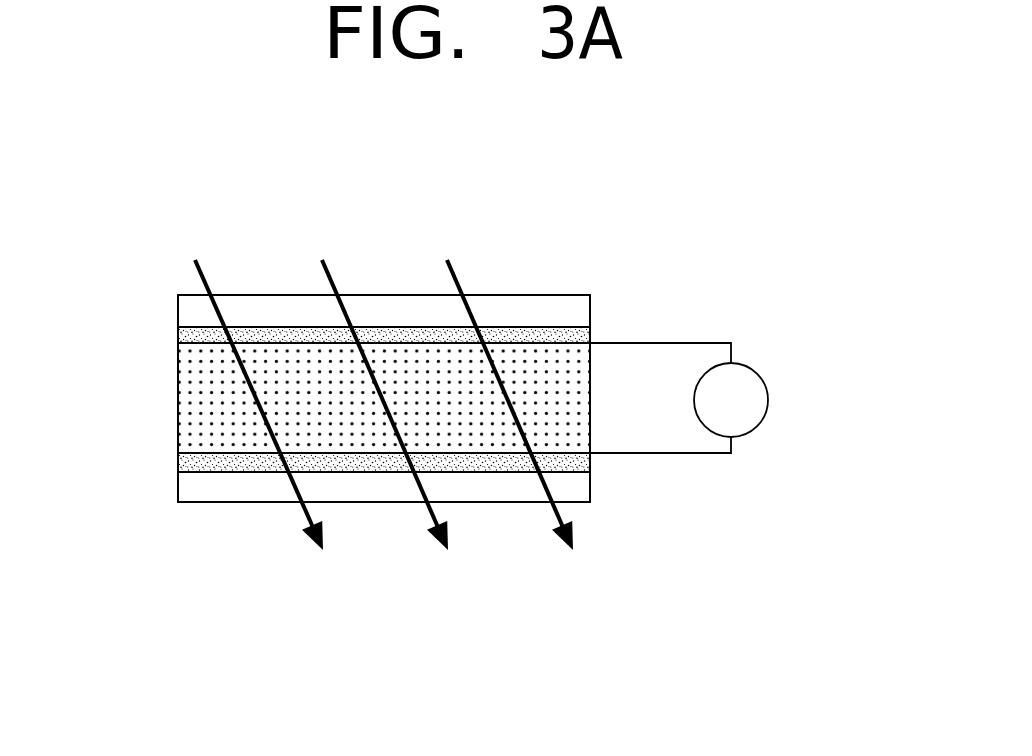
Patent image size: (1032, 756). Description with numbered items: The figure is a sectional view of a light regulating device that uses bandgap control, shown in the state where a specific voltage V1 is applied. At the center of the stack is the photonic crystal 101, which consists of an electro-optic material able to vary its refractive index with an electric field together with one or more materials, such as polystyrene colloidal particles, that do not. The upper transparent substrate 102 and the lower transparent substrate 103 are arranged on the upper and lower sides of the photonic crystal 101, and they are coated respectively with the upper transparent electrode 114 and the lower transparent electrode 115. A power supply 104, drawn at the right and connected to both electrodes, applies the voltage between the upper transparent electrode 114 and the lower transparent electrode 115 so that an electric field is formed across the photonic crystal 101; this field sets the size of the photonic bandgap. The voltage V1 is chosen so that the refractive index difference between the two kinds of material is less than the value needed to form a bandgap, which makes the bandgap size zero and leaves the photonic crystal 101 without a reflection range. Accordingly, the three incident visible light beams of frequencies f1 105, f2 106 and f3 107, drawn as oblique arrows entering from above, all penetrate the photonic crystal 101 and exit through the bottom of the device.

The photonic crystal 101 is at (212, 390).
The upper transparent substrate 102 is at (205, 320).
The lower transparent substrate 103 is at (205, 488).
The power supply 104 is at (780, 394).
The visible light having frequency f1 105 is at (204, 278).
The visible light having frequency f2 106 is at (331, 278).
The visible light having frequency f3 107 is at (456, 278).
The upper transparent electrode 114 is at (590, 333).
The lower transparent electrode 115 is at (590, 463).